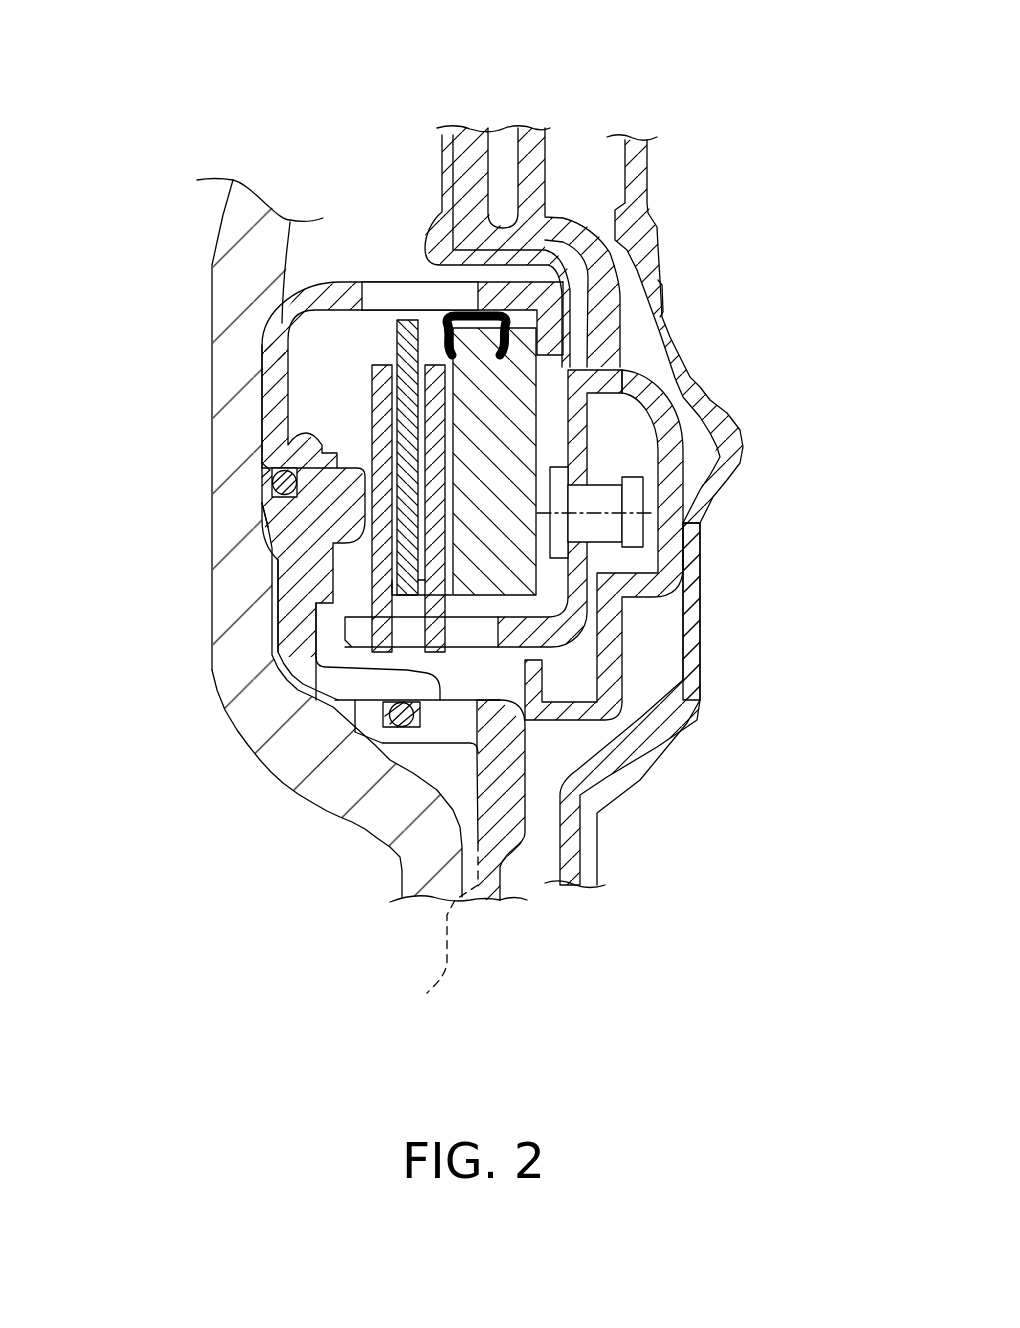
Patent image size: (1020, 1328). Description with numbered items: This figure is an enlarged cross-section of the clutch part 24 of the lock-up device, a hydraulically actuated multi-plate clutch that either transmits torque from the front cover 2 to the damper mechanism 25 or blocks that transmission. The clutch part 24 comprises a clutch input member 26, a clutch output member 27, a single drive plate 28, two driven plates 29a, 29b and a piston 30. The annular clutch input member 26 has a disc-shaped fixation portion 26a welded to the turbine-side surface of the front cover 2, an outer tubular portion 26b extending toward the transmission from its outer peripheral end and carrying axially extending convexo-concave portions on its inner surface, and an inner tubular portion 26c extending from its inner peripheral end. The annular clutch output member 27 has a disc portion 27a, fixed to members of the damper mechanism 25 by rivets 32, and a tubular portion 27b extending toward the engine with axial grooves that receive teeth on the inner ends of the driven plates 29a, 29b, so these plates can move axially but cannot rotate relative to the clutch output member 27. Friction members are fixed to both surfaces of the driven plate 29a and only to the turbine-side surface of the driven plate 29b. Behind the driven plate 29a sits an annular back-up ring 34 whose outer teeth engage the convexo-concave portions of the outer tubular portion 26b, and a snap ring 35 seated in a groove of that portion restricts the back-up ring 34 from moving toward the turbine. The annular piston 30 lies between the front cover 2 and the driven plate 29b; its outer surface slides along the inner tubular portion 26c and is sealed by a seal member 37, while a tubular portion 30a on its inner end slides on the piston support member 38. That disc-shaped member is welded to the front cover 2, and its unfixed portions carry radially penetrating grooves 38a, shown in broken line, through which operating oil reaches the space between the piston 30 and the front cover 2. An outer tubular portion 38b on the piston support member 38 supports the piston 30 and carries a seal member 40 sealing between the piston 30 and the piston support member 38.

The front cover 2 is at (458, 843).
The clutch part 24 is at (325, 248).
The damper mechanism 25 is at (523, 162).
The clutch input member 26 is at (295, 300).
The fixation portion 26a is at (278, 405).
The outer tubular portion 26b is at (390, 288).
The inner tubular portion 26c is at (275, 487).
The clutch output member 27 is at (578, 640).
The disc portion 27a is at (630, 560).
The tubular portion 27b is at (285, 690).
The drive plate 28 is at (390, 543).
The driven plate 29a is at (505, 480).
The driven plate 29b is at (383, 570).
The piston 30 is at (313, 678).
The tubular portion 30a is at (392, 745).
The rivets 32 is at (655, 467).
The back-up ring 34 is at (570, 432).
The snap ring 35 is at (535, 332).
The seal member 37 is at (265, 520).
The piston support member 38 is at (500, 878).
The grooves 38a is at (431, 935).
The outer tubular portion 38b is at (452, 728).
The seal member 40 is at (673, 737).